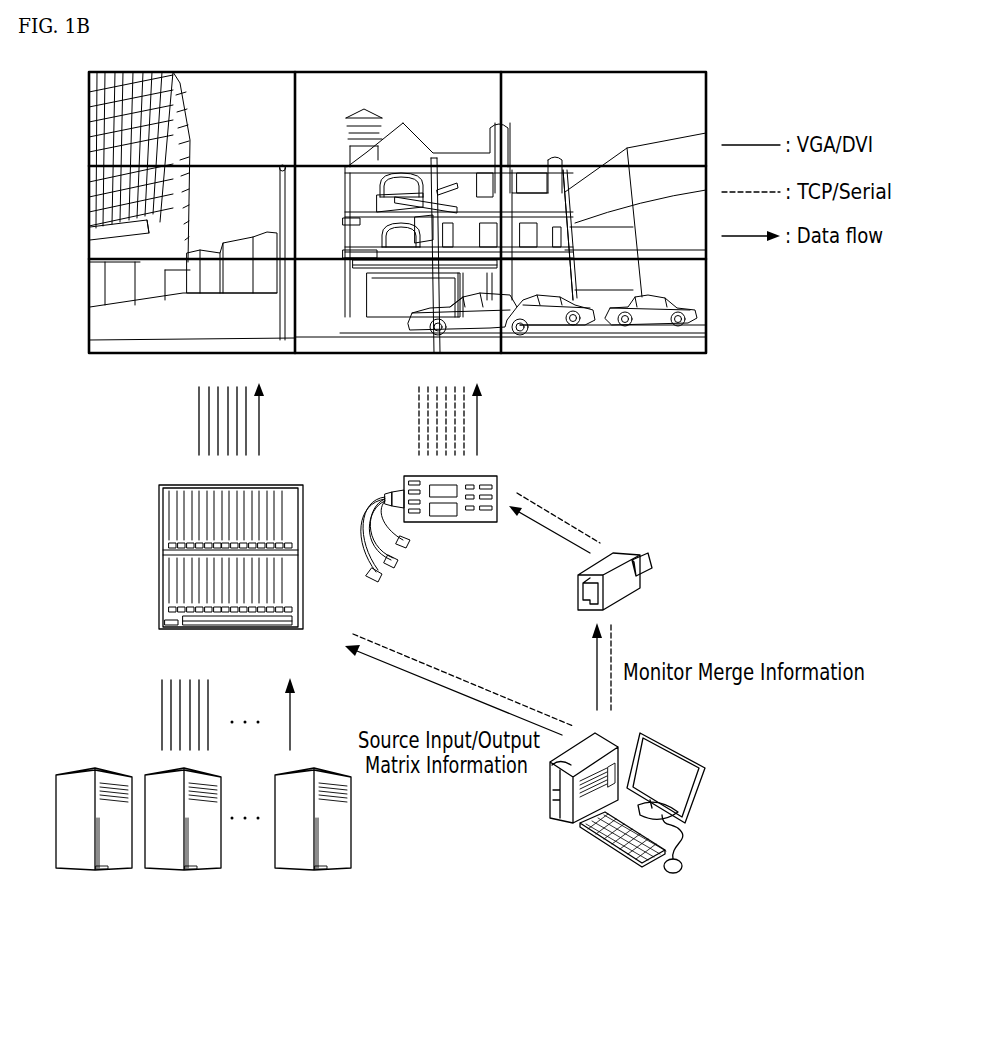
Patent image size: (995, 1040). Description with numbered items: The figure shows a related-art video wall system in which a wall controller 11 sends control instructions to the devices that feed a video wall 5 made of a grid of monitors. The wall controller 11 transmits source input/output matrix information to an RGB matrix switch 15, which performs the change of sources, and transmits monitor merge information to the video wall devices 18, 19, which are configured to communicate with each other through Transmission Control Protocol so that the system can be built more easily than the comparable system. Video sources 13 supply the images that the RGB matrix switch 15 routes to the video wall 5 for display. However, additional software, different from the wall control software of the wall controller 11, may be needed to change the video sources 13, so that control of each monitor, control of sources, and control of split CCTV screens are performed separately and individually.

The video wall 5 is at (88, 323).
The RGB matrix switch 15 is at (159, 555).
The video wall device 19 is at (494, 476).
The video wall device 18 is at (642, 553).
The video sources 13 is at (77, 771).
The wall controller 11 is at (700, 796).